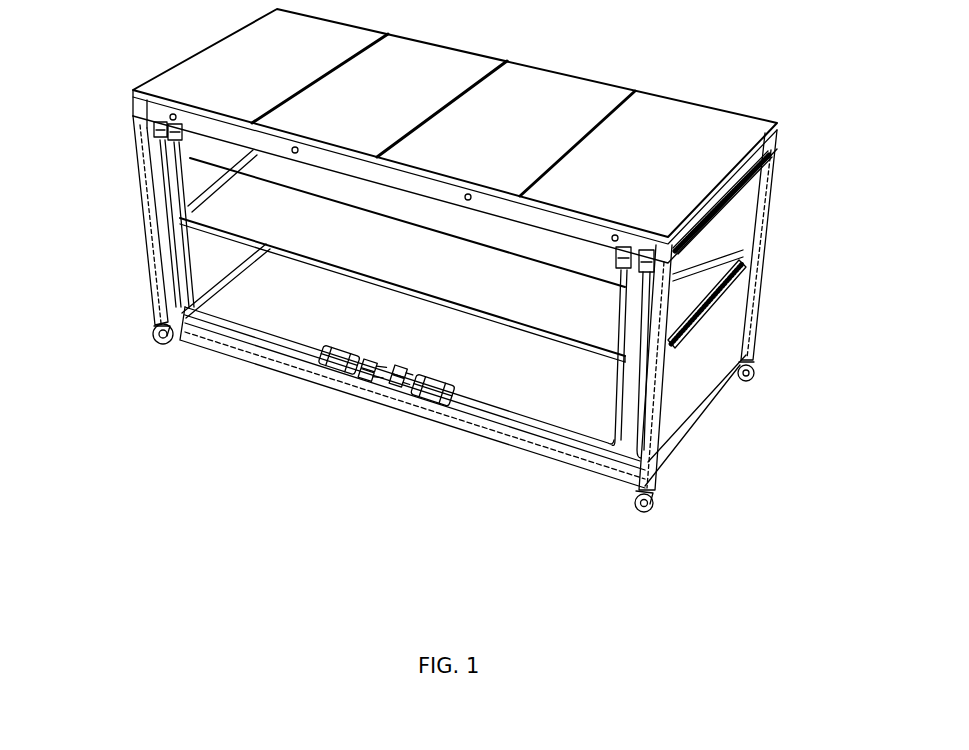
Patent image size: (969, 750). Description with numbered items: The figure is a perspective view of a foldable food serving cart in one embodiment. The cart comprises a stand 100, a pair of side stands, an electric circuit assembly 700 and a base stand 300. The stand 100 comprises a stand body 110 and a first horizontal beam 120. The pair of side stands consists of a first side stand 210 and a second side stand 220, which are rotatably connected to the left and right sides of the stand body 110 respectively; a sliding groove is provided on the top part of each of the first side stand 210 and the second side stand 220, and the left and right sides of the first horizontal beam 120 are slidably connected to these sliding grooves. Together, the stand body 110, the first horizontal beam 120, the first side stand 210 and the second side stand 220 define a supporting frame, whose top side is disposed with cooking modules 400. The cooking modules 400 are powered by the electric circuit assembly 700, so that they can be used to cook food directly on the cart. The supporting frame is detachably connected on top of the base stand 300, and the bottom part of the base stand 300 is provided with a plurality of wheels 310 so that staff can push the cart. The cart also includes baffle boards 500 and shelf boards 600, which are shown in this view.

The stand 100 is at (450, 283).
The stand body 110 is at (750, 247).
The first horizontal beam 120 is at (163, 117).
The first side stand 210 is at (165, 300).
The second side stand 220 is at (665, 401).
The base stand 300 is at (697, 407).
The wheels 310 is at (648, 493).
The cooking modules 400 is at (467, 80).
The baffle boards 500 is at (727, 329).
The shelf boards 600 is at (205, 222).
The electric circuit assembly 700 is at (341, 362).